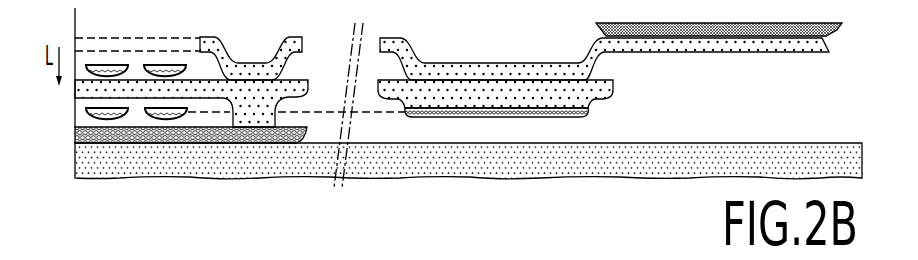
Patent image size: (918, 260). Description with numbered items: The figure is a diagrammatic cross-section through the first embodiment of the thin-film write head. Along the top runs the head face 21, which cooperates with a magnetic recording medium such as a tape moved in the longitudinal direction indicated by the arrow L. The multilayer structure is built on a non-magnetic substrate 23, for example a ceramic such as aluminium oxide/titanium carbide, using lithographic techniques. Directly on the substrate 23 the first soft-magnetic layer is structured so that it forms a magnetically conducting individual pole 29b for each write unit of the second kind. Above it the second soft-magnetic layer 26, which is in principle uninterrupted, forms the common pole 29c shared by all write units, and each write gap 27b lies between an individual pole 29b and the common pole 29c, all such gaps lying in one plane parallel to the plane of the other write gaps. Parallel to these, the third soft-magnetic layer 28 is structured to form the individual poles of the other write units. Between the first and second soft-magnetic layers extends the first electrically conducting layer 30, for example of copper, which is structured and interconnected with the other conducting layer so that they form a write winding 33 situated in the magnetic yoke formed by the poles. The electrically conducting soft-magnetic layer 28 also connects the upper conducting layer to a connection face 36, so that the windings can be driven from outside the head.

The head face 21 is at (75, 25).
The write gap 27b is at (82, 103).
The common pole 29c is at (137, 90).
The individual pole 29b is at (128, 130).
The non-magnetic substrate 23 is at (250, 166).
The write winding 33 is at (182, 120).
The connection face 36 is at (802, 32).
The third soft-magnetic layer 28 is at (713, 52).
The second soft-magnetic layer 26 is at (603, 98).
The first electrically conducting layer 30 is at (588, 117).